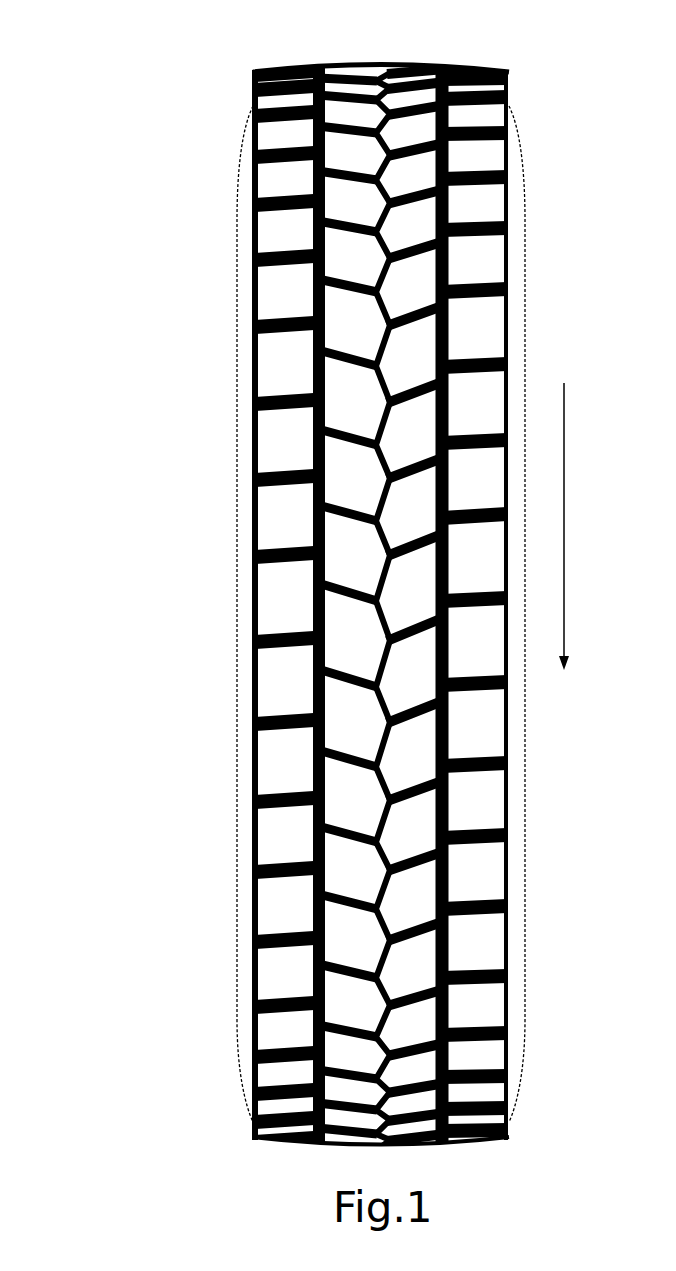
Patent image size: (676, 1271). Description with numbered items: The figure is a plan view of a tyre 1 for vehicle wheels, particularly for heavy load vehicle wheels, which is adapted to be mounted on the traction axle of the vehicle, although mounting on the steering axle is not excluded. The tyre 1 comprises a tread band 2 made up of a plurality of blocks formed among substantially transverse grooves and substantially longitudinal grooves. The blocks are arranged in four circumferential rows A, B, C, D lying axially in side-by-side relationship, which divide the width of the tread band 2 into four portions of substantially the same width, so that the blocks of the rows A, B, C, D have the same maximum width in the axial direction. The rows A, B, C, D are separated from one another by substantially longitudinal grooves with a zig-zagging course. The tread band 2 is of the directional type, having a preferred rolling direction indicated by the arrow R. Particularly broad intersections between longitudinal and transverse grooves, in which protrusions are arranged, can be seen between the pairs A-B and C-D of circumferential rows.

The tyre 1 is at (150, 345).
The tread band 2 is at (508, 200).
The circumferential row of blocks A is at (256, 62).
The circumferential row of blocks B is at (318, 62).
The circumferential row of blocks C is at (380, 62).
The circumferential row of blocks D is at (504, 62).
The preferred rolling direction R is at (575, 526).